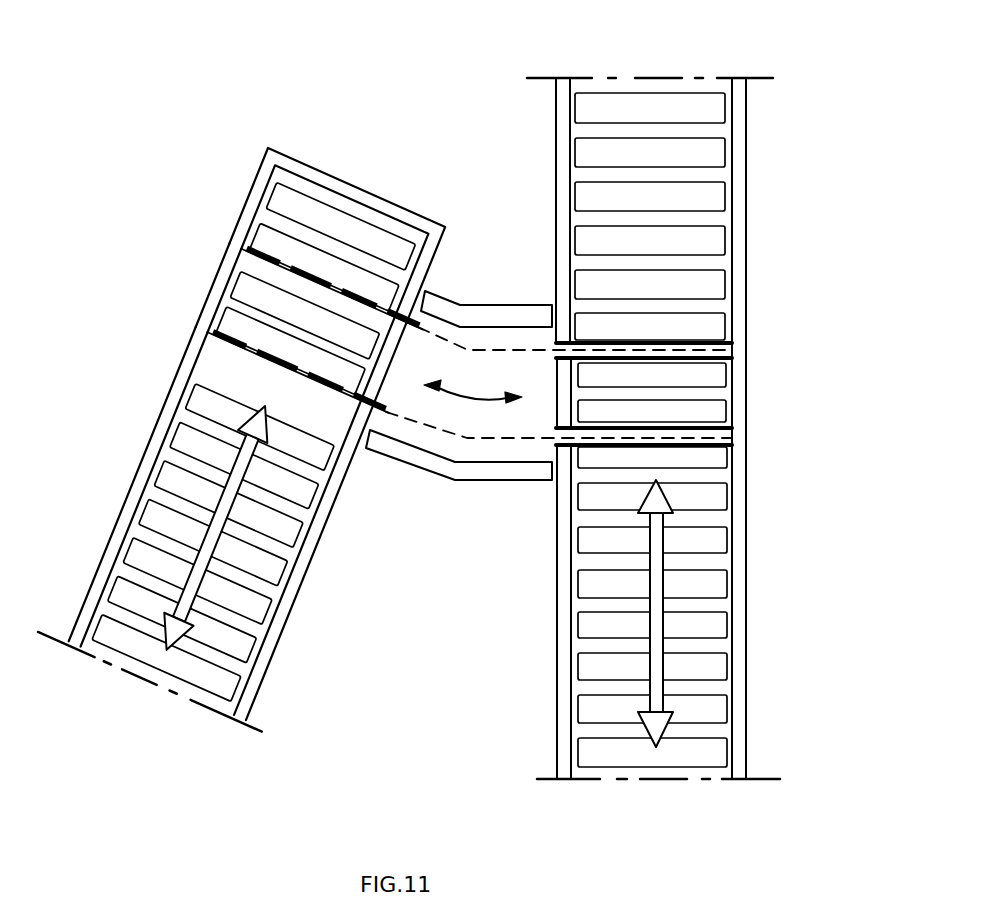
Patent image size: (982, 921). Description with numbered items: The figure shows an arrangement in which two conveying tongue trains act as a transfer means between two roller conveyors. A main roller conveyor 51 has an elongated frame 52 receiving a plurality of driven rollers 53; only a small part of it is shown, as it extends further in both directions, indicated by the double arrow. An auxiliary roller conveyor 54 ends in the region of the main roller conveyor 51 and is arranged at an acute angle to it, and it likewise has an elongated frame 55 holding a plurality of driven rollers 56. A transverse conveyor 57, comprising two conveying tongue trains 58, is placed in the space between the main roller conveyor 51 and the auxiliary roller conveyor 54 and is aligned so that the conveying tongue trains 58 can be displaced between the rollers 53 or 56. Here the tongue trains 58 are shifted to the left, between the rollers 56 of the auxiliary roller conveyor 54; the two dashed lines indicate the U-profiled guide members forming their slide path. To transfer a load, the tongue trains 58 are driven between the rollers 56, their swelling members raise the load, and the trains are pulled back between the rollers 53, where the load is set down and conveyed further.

The main roller conveyor 51 is at (653, 62).
The elongated frame 52 is at (742, 570).
The driven rollers 53 is at (722, 372).
The auxiliary roller conveyor 54 is at (313, 147).
The elongated frame 55 is at (295, 570).
The driven rollers 56 is at (230, 316).
The transverse conveyor 57 is at (505, 468).
The conveying tongue trains 58 is at (410, 328).